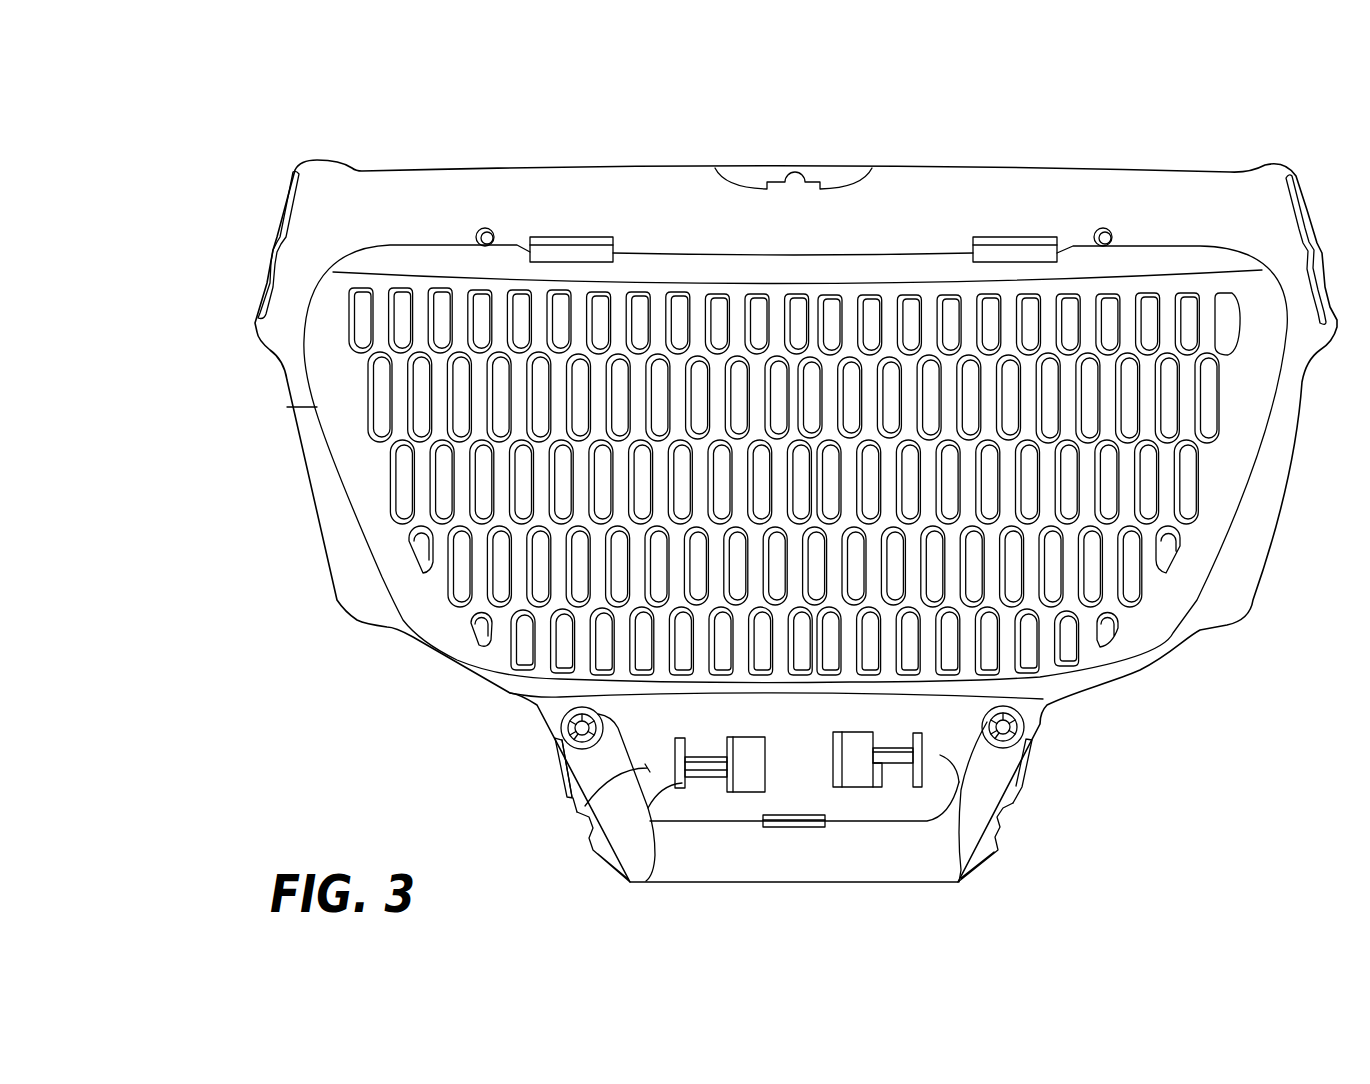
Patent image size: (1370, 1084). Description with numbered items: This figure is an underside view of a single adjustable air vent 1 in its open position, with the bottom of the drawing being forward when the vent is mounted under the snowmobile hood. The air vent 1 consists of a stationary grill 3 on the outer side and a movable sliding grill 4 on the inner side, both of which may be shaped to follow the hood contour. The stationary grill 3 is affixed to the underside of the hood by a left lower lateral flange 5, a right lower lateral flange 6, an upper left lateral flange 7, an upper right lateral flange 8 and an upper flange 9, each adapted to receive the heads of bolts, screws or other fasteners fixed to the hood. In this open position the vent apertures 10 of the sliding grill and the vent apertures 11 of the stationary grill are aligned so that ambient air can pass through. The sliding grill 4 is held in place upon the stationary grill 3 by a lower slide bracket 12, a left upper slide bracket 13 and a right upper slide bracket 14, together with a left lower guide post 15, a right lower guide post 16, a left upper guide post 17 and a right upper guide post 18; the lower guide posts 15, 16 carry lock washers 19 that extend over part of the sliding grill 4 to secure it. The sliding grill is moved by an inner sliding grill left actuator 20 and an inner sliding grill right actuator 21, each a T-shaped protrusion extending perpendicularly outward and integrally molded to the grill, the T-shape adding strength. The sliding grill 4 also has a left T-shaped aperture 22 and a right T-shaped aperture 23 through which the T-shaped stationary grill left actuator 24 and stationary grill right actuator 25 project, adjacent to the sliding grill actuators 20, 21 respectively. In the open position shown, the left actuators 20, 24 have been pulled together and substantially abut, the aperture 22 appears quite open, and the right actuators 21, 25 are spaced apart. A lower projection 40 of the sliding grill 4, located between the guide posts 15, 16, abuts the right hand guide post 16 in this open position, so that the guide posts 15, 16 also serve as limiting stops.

The adjustable air vent 1 is at (390, 656).
The stationary grill 3 is at (357, 623).
The sliding grill 4 is at (287, 407).
The left lower lateral flange 5 is at (590, 838).
The right lower lateral flange 6 is at (1007, 820).
The upper left lateral flange 7 is at (258, 275).
The upper right lateral flange 8 is at (1307, 212).
The upper flange 9 is at (770, 173).
The vent apertures of the sliding grill 10 is at (557, 662).
The vent apertures of the stationary grill 11 is at (443, 300).
The lower slide bracket 12 is at (800, 830).
The left upper slide bracket 13 is at (582, 245).
The right upper slide bracket 14 is at (1020, 245).
The left lower guide post 15 is at (582, 728).
The right lower guide post 16 is at (1030, 745).
The left upper guide post 17 is at (487, 229).
The right upper guide post 18 is at (1103, 229).
The lock washer 19 is at (562, 740).
The inner sliding grill left actuator 20 is at (648, 882).
The inner sliding grill right actuator 21 is at (927, 882).
The left T-shaped aperture 22 is at (748, 775).
The right T-shaped aperture 23 is at (860, 768).
The stationary grill left actuator 24 is at (714, 777).
The stationary grill right actuator 25 is at (848, 780).
The lower projection 40 is at (960, 880).